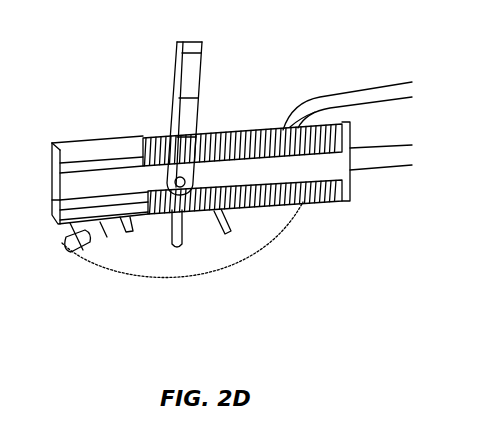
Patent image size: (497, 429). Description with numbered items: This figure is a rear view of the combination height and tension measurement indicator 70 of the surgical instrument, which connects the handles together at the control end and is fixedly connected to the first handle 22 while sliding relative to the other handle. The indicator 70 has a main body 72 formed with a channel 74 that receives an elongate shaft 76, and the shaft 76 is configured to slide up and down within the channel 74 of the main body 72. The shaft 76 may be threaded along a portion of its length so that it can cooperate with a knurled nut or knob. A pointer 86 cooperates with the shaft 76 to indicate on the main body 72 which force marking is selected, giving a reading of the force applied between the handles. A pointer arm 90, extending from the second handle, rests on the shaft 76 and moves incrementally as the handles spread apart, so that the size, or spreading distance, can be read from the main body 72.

The first handle 22 is at (190, 78).
The combination height and tension measurement indicator 70 is at (242, 248).
The main body 72 is at (135, 138).
The channel 74 is at (115, 183).
The elongate shaft 76 is at (377, 165).
The pointer 86 is at (73, 248).
The pointer arm 90 is at (350, 100).